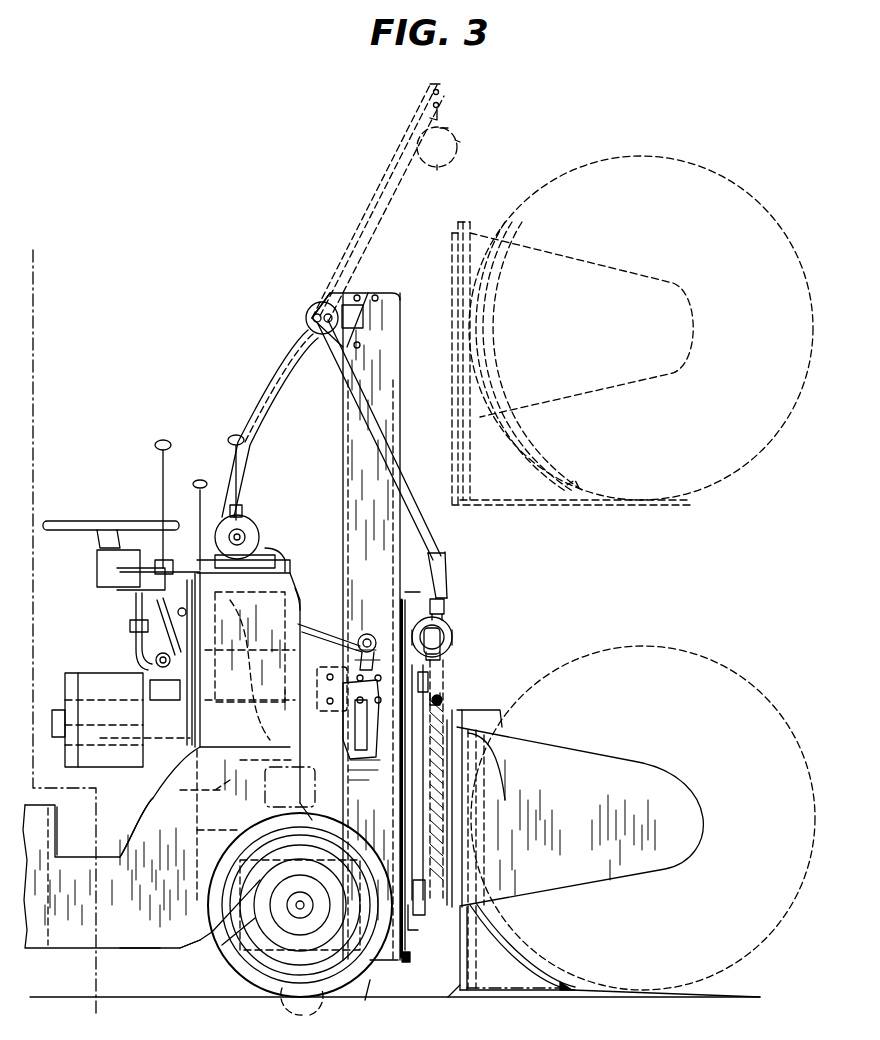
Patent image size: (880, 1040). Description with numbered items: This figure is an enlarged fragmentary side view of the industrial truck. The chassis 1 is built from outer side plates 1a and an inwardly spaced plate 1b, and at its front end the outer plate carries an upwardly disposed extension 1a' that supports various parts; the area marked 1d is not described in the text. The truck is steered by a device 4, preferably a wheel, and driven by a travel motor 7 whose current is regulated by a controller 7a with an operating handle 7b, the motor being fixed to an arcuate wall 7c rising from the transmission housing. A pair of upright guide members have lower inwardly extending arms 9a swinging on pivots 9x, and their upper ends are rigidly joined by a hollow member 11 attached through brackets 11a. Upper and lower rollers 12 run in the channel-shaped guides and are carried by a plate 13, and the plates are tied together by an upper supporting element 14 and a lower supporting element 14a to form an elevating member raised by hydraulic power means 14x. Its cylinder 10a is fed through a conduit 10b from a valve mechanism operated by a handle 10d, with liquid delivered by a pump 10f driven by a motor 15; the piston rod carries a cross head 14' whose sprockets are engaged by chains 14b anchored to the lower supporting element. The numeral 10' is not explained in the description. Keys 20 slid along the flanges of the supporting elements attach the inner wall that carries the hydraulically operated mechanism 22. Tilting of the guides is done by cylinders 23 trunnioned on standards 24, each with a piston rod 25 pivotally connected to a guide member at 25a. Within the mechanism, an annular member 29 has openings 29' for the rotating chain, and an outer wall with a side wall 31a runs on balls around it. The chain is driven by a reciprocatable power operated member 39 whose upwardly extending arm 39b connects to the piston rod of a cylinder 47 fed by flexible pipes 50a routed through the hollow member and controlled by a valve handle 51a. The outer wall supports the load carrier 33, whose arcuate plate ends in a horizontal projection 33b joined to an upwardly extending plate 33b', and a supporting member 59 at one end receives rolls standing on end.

The chassis 1 is at (120, 902).
The outer side plates 1a is at (140, 963).
The plate 1b is at (195, 944).
The upwardly disposed extension 1a' is at (130, 827).
The body lower portion 1d is at (145, 729).
The steering device 4 is at (70, 508).
The motor 7 is at (33, 250).
The controller 7a is at (262, 522).
The operating handle 7b is at (245, 480).
The arcuate wall 7c is at (300, 776).
The inwardly extending arms 9a is at (248, 855).
The pivots 9x is at (298, 802).
The cylinder 10a is at (428, 668).
The conduit 10b is at (305, 1005).
The mast lower portion 10' is at (357, 1001).
The operating handle 10d is at (207, 472).
The pump 10f is at (195, 787).
The hollow member 11 is at (322, 300).
The brackets 11a is at (372, 290).
The rollers 12 is at (352, 772).
The plate 13 is at (412, 940).
The upper supporting element 14 is at (459, 780).
The cross head 14' is at (455, 605).
The lower supporting element 14a is at (455, 860).
The chains 14b is at (345, 720).
The power means 14x is at (424, 602).
The motor 15 is at (100, 658).
The keys 20 is at (430, 680).
The hydraulically operated mechanism 22 is at (455, 640).
The cylinders 23 is at (266, 600).
The standards 24 is at (190, 605).
The rod 25 is at (330, 626).
The pivotal connection 25a is at (358, 652).
The annular member 29 is at (506, 820).
The openings 29' is at (503, 859).
The side wall 31a is at (470, 705).
The load carrier 33 is at (570, 940).
The projection 33b is at (665, 1005).
The upwardly extending plate 33b' is at (459, 1003).
The power operated member 39 is at (442, 696).
The upwardly extending arm 39b is at (442, 650).
The cylinder 47 is at (448, 625).
The flexible pipe 50a is at (298, 380).
The handle 51a is at (158, 470).
The supporting member 59 is at (590, 872).